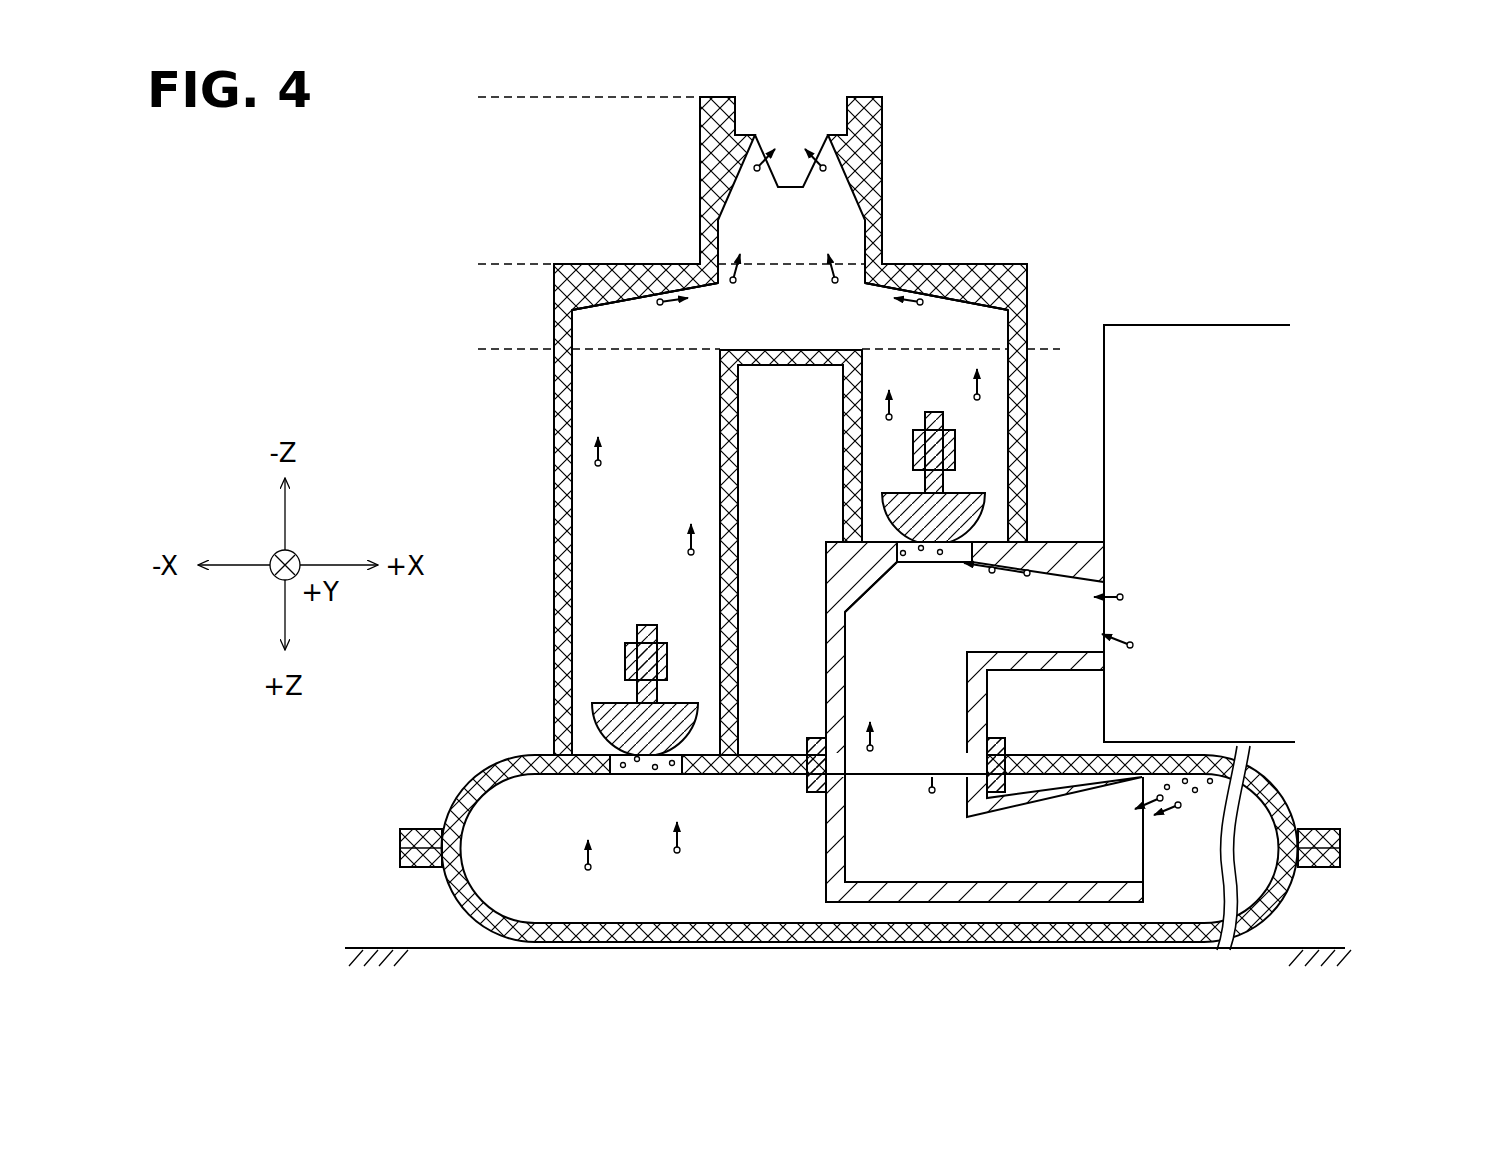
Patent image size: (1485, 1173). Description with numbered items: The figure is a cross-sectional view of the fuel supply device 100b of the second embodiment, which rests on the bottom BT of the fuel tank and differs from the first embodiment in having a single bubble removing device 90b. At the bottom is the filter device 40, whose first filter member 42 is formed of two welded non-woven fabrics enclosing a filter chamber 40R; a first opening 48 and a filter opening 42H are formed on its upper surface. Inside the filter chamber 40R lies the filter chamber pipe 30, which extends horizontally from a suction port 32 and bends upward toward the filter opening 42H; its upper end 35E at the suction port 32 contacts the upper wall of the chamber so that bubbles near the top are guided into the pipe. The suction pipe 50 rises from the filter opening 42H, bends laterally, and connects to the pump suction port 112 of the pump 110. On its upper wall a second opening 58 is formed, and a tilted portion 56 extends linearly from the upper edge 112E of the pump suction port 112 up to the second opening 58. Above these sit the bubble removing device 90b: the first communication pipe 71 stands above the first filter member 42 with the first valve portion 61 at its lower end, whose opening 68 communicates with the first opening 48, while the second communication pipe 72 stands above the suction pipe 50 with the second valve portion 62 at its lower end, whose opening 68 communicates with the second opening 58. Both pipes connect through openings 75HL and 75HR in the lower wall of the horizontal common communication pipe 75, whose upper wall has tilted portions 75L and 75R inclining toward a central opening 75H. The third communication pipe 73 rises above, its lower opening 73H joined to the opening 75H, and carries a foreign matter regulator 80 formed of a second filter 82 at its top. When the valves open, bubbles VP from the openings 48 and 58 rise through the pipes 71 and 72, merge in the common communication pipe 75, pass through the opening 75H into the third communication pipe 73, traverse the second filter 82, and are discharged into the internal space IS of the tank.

The internal space IS is at (332, 152).
The third communication pipe 73 is at (530, 97).
The common communication pipe 75 is at (530, 264).
The first communication pipe 71 is at (530, 349).
The second communication pipe 72 is at (1037, 349).
The second filter 82 is at (845, 170).
The foreign matter regulator 80 is at (887, 168).
The tilted portion 75L is at (628, 310).
The tilted portion 75R is at (950, 310).
The opening 73H is at (800, 265).
The opening 75HL is at (650, 350).
The opening 75HR is at (907, 350).
The opening 75H is at (863, 277).
The second valve portion 62 is at (895, 450).
The first valve portion 61 is at (678, 658).
The suction pipe 50 is at (826, 562).
The filter chamber pipe 30 is at (948, 742).
The second opening 58 is at (905, 565).
The tilted portion 56 is at (1080, 557).
The opening 68 is at (970, 565).
The first opening 48 is at (623, 774).
The pump suction port 112 is at (1104, 670).
The upper edge 112E is at (1115, 594).
The filter opening 42H is at (973, 737).
The pump 110 is at (1195, 325).
The filter device 40 is at (853, 825).
The first filter member 42 is at (530, 755).
The filter chamber 40R is at (504, 839).
The bubbles VP is at (675, 853).
The upper end 35E is at (1165, 778).
The suction port 32 is at (1143, 843).
The bottom BT is at (1347, 948).
The bubble removing device 90b is at (1100, 235).
The fuel supply device 100b is at (1238, 183).